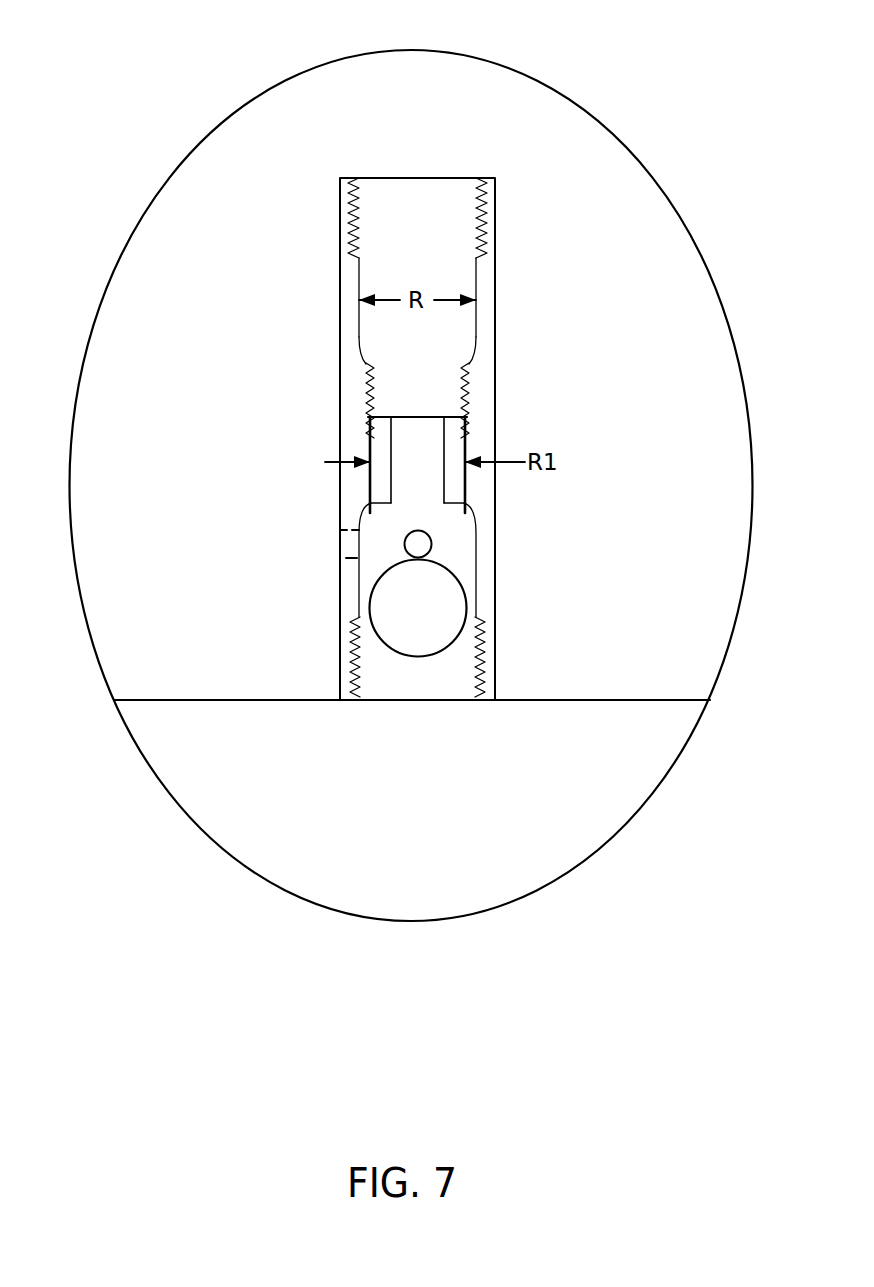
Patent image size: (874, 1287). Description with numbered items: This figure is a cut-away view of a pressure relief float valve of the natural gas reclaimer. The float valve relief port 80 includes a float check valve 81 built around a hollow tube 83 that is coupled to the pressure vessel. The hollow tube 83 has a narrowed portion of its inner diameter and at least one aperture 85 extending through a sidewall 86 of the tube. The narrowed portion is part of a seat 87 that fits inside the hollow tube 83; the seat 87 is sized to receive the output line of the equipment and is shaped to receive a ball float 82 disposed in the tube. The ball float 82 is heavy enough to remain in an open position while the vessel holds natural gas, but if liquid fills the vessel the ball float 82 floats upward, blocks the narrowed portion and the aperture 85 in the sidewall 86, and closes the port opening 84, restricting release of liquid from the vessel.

The float valve relief port 80 is at (160, 110).
The float check valve 81 is at (490, 280).
The ball float 82 is at (440, 628).
The hollow tube 83 is at (480, 515).
The port opening 84 is at (408, 177).
The aperture 85 is at (418, 547).
The sidewall 86 is at (340, 527).
The seat 87 is at (465, 423).